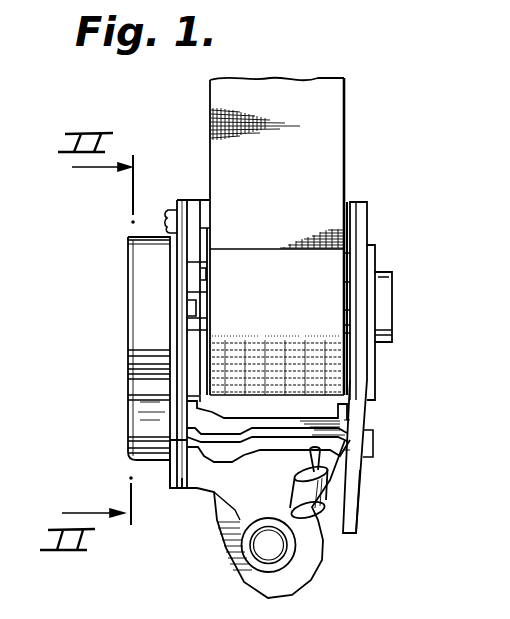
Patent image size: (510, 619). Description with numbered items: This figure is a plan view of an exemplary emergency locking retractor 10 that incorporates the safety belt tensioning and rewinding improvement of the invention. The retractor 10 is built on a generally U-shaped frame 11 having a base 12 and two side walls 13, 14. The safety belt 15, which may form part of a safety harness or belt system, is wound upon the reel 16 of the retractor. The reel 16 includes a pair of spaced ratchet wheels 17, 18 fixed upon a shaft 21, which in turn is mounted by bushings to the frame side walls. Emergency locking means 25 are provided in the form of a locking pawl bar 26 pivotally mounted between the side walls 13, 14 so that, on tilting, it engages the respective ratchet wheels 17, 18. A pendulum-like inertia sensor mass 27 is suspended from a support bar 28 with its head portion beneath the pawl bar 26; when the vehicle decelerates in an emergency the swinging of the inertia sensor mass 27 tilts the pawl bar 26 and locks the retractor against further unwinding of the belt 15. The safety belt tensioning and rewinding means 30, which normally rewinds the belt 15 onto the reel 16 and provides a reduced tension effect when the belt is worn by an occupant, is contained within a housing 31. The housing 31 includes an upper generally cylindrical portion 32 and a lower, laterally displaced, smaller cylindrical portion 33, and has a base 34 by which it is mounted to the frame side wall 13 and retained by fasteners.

The retractor 10 is at (360, 132).
The frame 11 is at (357, 200).
The base 12 is at (200, 200).
The side wall 13 is at (166, 213).
The side wall 14 is at (360, 233).
The safety belt 15 is at (275, 97).
The reel 16 is at (349, 273).
The ratchet wheel 17 is at (346, 355).
The ratchet wheel 18 is at (203, 277).
The shaft 21 is at (190, 308).
The emergency locking means 25 is at (326, 522).
The locking pawl bar 26 is at (342, 421).
The inertia sensor mass 27 is at (298, 493).
The support bar 28 is at (263, 442).
The safety belt tensioning and rewinding means 30 is at (121, 388).
The housing 31 is at (148, 344).
The upper cylindrical portion 32 is at (143, 240).
The lower cylindrical portion 33 is at (135, 441).
The base 34 is at (172, 472).